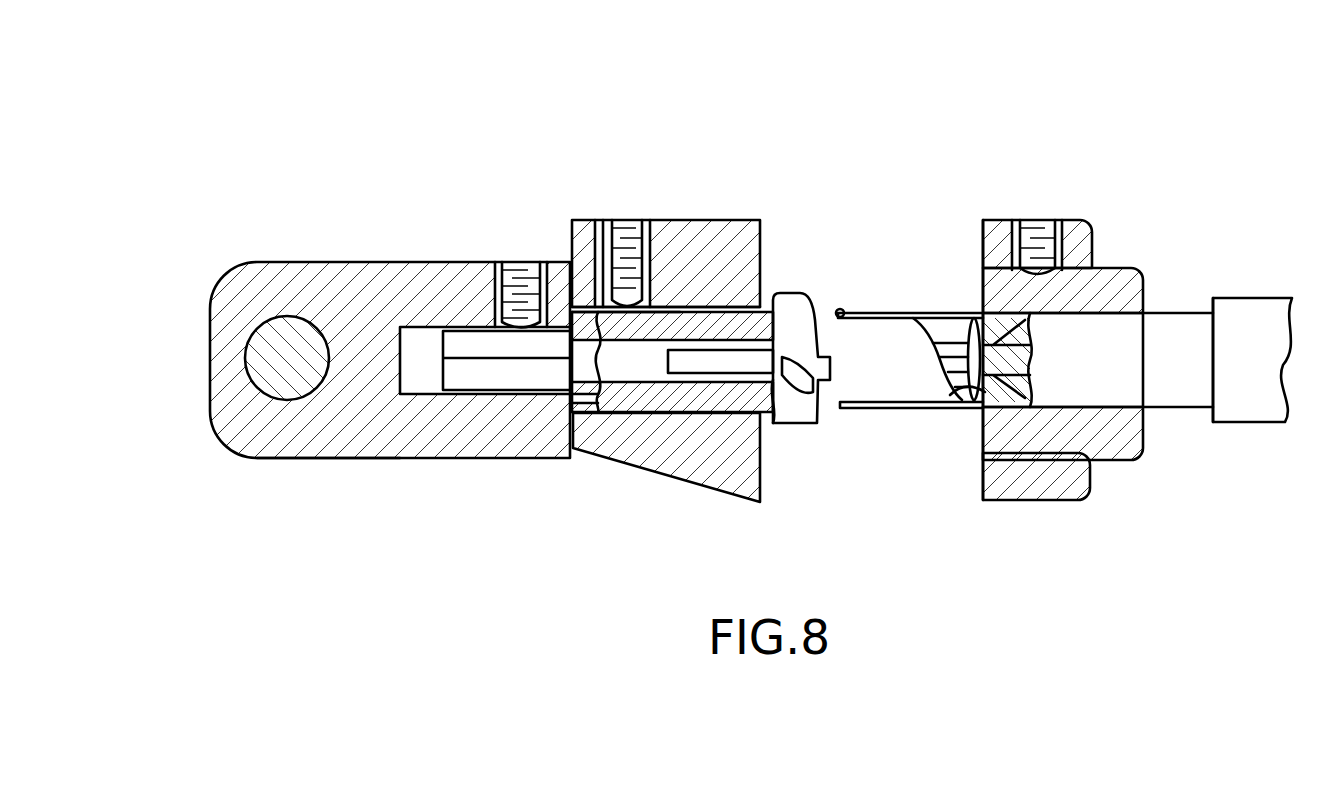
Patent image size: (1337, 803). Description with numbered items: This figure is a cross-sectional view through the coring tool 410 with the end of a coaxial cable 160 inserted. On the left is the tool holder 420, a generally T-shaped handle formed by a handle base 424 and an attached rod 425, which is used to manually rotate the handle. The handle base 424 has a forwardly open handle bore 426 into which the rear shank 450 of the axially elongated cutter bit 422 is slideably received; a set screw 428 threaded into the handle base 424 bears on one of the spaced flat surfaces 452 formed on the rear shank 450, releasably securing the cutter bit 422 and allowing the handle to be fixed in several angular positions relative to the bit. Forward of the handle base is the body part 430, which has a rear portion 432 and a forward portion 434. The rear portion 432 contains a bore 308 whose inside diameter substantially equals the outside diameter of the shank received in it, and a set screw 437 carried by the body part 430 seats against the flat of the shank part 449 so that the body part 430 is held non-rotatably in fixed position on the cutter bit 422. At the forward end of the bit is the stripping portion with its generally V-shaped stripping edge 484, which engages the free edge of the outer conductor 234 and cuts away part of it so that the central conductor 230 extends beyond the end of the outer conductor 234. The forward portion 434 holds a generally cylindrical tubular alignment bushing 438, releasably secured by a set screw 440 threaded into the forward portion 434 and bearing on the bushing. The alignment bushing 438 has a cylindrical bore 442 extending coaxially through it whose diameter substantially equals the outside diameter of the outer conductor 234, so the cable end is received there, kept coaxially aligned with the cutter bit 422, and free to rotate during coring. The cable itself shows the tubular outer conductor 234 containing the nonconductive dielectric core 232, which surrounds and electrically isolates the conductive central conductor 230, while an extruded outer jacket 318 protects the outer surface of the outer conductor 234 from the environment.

The coring tool 410 is at (938, 116).
The tool holder 420 is at (323, 245).
The handle base 424 is at (303, 458).
The rod 425 is at (270, 366).
The handle bore 426 is at (438, 391).
The rear shank 450 is at (508, 373).
The flat surface 452 is at (462, 331).
The set screw 428 is at (510, 275).
The shank part 449 is at (587, 310).
The body part 430 is at (668, 220).
The rear portion 432 is at (737, 237).
The set screw 437 is at (612, 237).
The cutter bit 422 is at (792, 276).
The bore 308 is at (648, 413).
The central conductor 230 is at (747, 363).
The outer conductor 234 is at (900, 408).
The stripping edge 484 is at (845, 311).
The bore 442 is at (985, 392).
The dielectric core 232 is at (1005, 328).
The alignment bushing 438 is at (1117, 265).
The set screw 440 is at (1025, 232).
The forward portion 434 is at (1022, 500).
The outer jacket 318 is at (1263, 315).
The coaxial cable 160 is at (1221, 268).